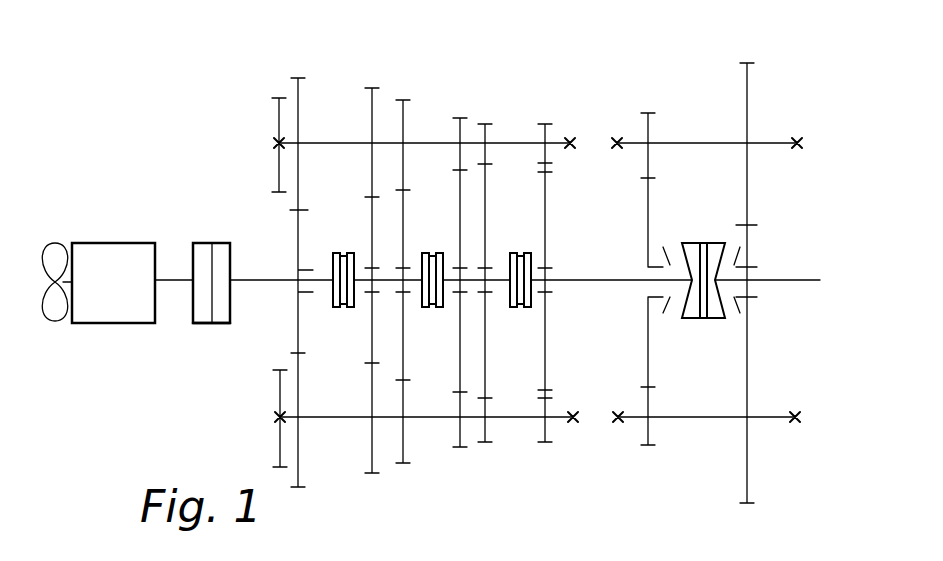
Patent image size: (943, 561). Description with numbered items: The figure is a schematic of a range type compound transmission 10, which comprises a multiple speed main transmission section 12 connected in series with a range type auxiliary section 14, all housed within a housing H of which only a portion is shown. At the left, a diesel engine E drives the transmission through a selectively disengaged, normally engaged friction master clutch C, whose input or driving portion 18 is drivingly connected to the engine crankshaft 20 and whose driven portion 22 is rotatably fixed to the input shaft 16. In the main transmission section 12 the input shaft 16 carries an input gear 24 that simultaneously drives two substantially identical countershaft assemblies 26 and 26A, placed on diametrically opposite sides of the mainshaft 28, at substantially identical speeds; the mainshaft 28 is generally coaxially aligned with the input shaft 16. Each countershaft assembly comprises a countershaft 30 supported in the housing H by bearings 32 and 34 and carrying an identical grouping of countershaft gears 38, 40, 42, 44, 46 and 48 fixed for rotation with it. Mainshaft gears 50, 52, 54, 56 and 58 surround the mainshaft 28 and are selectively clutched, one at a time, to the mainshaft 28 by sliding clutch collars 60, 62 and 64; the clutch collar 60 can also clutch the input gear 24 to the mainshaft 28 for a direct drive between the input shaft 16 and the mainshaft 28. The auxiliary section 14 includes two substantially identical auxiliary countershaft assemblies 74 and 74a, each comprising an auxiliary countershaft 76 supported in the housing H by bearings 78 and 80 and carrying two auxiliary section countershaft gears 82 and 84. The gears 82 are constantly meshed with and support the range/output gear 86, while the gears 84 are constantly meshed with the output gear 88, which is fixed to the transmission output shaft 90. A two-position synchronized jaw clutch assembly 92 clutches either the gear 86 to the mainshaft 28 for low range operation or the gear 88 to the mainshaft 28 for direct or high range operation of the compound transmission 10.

The diesel engine E is at (113, 283).
The friction master clutch C is at (213, 242).
The housing H is at (278, 118).
The compound transmission 10 is at (591, 128).
The main transmission section 12 is at (432, 108).
The range type auxiliary section 14 is at (701, 75).
The input shaft 16 is at (265, 278).
The input or driving portion 18 is at (200, 314).
The engine crankshaft 20 is at (175, 278).
The driven portion 22 is at (222, 312).
The input gear 24 is at (300, 247).
The countershaft assembly 26 is at (313, 141).
The countershaft assembly 26A is at (343, 419).
The mainshaft 28 is at (614, 283).
The countershaft 30 is at (352, 146).
The bearing 32 is at (277, 419).
The bearing 34 is at (578, 420).
The countershaft gear 38 is at (300, 476).
The countershaft gear 40 is at (372, 465).
The countershaft gear 42 is at (405, 458).
The countershaft gear 44 is at (457, 442).
The countershaft gear 46 is at (488, 436).
The countershaft gear 48 is at (540, 436).
The mainshaft gear 50 is at (370, 328).
The mainshaft gear 52 is at (405, 365).
The mainshaft gear 54 is at (460, 362).
The mainshaft gear 56 is at (487, 375).
The mainshaft gear 58 is at (543, 388).
The sliding clutch collar 60 is at (333, 300).
The sliding clutch collar 62 is at (443, 262).
The sliding clutch collar 64 is at (508, 262).
The auxiliary countershaft assembly 74 is at (672, 142).
The auxiliary countershaft assembly 74a is at (700, 420).
The auxiliary countershaft 76 is at (730, 147).
The bearing 78 is at (616, 150).
The bearing 80 is at (800, 140).
The auxiliary section countershaft gear 82 is at (650, 125).
The auxiliary section countershaft gear 84 is at (750, 72).
The range/output gear 86 is at (647, 248).
The output gear 88 is at (746, 237).
The transmission output shaft 90 is at (776, 280).
The synchronized jaw clutch assembly 92 is at (698, 320).